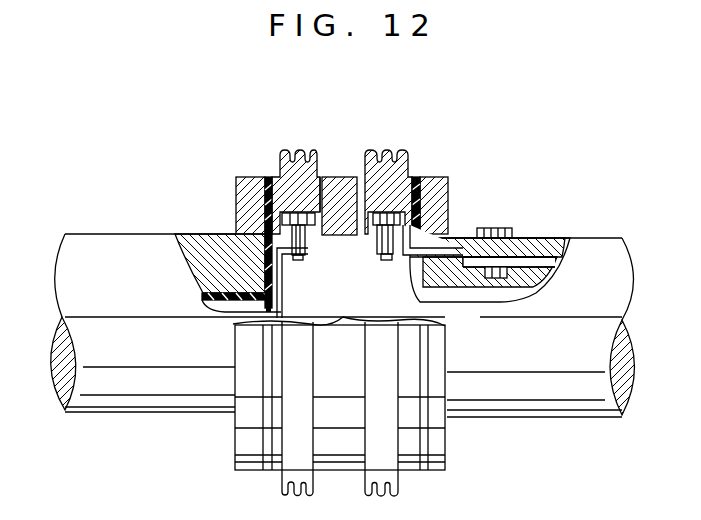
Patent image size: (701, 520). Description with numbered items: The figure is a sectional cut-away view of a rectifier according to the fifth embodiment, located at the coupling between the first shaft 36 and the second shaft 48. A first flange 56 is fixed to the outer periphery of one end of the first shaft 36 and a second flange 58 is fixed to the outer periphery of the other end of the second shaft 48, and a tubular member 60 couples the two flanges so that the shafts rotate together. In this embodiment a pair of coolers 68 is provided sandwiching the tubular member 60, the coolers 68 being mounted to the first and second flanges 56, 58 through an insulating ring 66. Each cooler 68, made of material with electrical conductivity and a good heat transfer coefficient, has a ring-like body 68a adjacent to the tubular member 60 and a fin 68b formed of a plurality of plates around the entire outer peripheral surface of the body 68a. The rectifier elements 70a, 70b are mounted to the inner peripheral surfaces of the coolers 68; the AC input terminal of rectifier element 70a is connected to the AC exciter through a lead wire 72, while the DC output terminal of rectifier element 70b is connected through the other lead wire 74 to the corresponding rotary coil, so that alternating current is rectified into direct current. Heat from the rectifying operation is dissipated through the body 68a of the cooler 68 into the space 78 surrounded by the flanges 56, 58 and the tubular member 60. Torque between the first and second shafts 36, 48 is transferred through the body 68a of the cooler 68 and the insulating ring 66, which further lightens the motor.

The first shaft 36 is at (152, 410).
The second shaft 48 is at (527, 412).
The first flange 56 is at (242, 193).
The second flange 58 is at (450, 189).
The tubular member 60 is at (340, 177).
The insulating ring 66 is at (269, 177).
The cooler 68 is at (385, 190).
The body 68a is at (297, 188).
The fin 68b is at (314, 177).
The rectifier element 70a is at (373, 233).
The rectifier element 70b is at (307, 237).
The lead wire 72 is at (433, 303).
The lead wire 74 is at (285, 290).
The space 78 is at (344, 302).